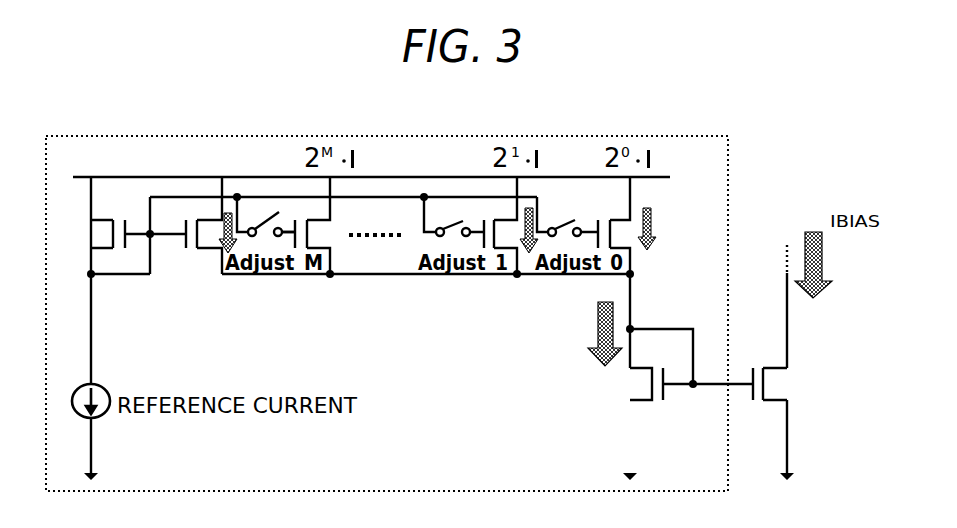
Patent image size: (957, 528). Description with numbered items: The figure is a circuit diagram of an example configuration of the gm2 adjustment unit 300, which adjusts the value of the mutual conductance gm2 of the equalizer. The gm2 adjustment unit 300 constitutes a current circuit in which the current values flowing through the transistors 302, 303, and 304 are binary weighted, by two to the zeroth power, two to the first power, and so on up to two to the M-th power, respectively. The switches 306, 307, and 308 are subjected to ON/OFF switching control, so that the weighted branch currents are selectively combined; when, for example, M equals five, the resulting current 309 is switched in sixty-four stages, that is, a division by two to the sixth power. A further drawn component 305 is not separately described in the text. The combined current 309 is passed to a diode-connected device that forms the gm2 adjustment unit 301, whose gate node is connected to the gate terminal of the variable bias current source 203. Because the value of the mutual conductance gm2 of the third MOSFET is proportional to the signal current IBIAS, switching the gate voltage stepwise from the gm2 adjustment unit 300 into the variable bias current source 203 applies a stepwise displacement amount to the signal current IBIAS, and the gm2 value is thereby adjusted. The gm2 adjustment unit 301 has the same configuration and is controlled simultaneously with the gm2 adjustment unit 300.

The gm2 adjustment unit 300 is at (343, 137).
The gm2 adjustment unit 301 is at (637, 385).
The transistor 302 is at (618, 237).
The transistor 303 is at (508, 236).
The transistor 304 is at (320, 236).
The PMOS transistor 305 is at (210, 236).
The switch 306 is at (568, 226).
The switch 307 is at (455, 225).
The switch 308 is at (264, 218).
The current 309 is at (597, 332).
The variable bias current source 203 is at (776, 383).